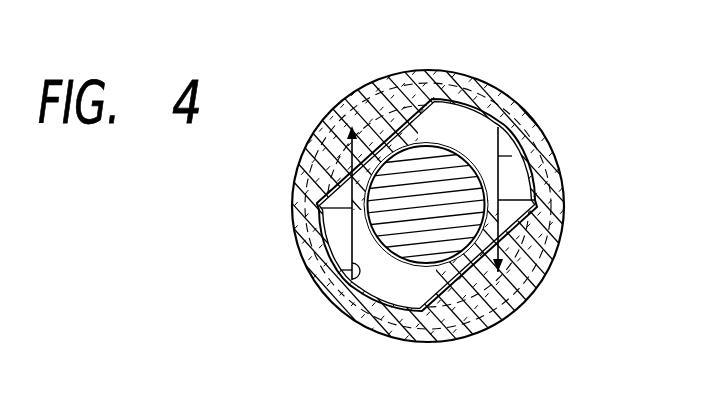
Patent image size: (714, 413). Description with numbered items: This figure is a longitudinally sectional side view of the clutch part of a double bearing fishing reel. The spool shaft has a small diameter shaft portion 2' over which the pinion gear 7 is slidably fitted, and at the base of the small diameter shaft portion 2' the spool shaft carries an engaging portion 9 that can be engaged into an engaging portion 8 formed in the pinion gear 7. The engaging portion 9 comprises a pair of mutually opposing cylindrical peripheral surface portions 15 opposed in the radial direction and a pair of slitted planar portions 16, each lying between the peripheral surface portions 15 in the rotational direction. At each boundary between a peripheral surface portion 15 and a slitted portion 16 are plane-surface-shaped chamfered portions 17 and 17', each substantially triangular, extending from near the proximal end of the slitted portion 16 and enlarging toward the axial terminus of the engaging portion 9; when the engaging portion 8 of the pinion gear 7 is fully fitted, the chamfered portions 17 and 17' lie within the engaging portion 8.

The small diameter shaft portion 2' is at (428, 177).
The pinion gear 7 is at (558, 263).
The engaging portion 8 is at (347, 300).
The engaging portion 9 is at (479, 134).
The cylindrical peripheral surface portions 15 is at (470, 100).
The slitted planar portions 16 is at (538, 174).
The chamfered portion 17 is at (428, 191).
The chamfered portion 17' is at (431, 203).